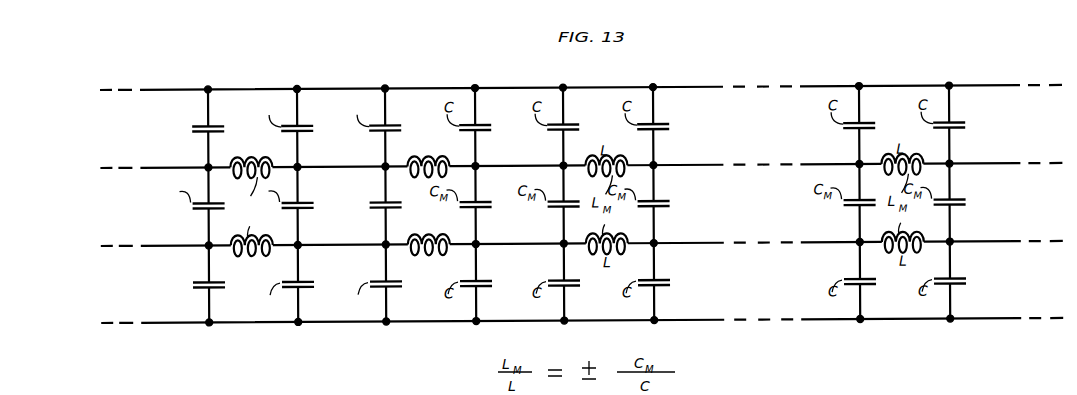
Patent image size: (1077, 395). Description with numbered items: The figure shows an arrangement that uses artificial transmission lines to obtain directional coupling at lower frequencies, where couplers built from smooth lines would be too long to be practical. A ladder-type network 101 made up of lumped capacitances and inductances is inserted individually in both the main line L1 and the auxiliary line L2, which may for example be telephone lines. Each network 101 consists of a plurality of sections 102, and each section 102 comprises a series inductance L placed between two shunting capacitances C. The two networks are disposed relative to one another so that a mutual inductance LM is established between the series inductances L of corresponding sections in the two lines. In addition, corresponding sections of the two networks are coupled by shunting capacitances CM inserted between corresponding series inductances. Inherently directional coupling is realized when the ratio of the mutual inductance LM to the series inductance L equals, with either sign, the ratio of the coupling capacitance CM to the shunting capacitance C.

The ladder-type network 101 is at (573, 204).
The section 102 is at (347, 103).
The main line L1 is at (124, 92).
The auxiliary line L2 is at (576, 282).
The shunting capacitance C is at (192, 128).
The shunting capacitance CM is at (367, 203).
The series inductance L is at (251, 208).
The mutual inductance LM is at (434, 178).